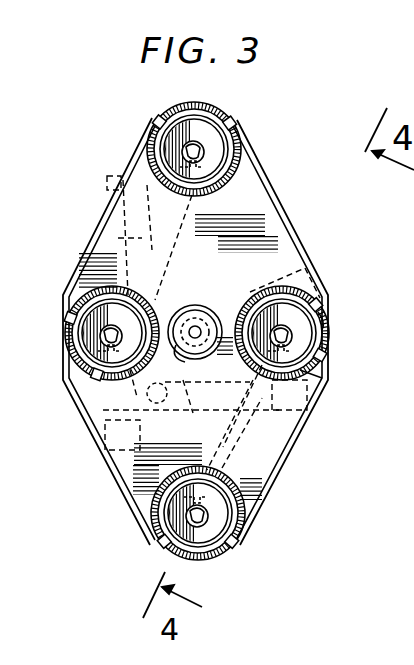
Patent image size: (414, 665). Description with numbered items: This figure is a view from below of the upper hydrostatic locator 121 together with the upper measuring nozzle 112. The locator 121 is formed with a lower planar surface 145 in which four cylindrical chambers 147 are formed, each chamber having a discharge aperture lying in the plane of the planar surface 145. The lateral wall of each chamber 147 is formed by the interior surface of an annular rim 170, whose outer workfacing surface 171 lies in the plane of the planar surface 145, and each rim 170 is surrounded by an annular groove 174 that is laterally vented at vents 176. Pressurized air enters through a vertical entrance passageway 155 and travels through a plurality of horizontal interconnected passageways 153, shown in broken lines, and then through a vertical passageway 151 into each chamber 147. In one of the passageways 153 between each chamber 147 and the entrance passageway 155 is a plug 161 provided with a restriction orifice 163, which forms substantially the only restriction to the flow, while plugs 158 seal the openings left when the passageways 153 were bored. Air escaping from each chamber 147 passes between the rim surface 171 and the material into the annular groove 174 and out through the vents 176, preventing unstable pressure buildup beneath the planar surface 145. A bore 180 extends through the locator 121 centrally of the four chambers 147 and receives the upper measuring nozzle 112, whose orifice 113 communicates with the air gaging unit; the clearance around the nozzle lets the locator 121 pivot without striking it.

The upper measuring nozzle 112 is at (194, 328).
The orifice 113 is at (199, 328).
The upper locator 121 is at (90, 232).
The lower planar surface 145 is at (257, 207).
The cylindrical chamber 147 is at (217, 160).
The vertical passageway 151 is at (203, 160).
The horizontal interconnected passageways 153 is at (162, 252).
The vertical entrance passageway 155 is at (150, 396).
The plug 158 is at (118, 178).
The plug 161 is at (237, 480).
The restriction orifice 163 is at (222, 462).
The annular rim 170 is at (160, 143).
The outer workfacing surface 171 is at (303, 362).
The annular groove 174 is at (322, 322).
The vent 176 is at (153, 116).
The bore 180 is at (177, 352).